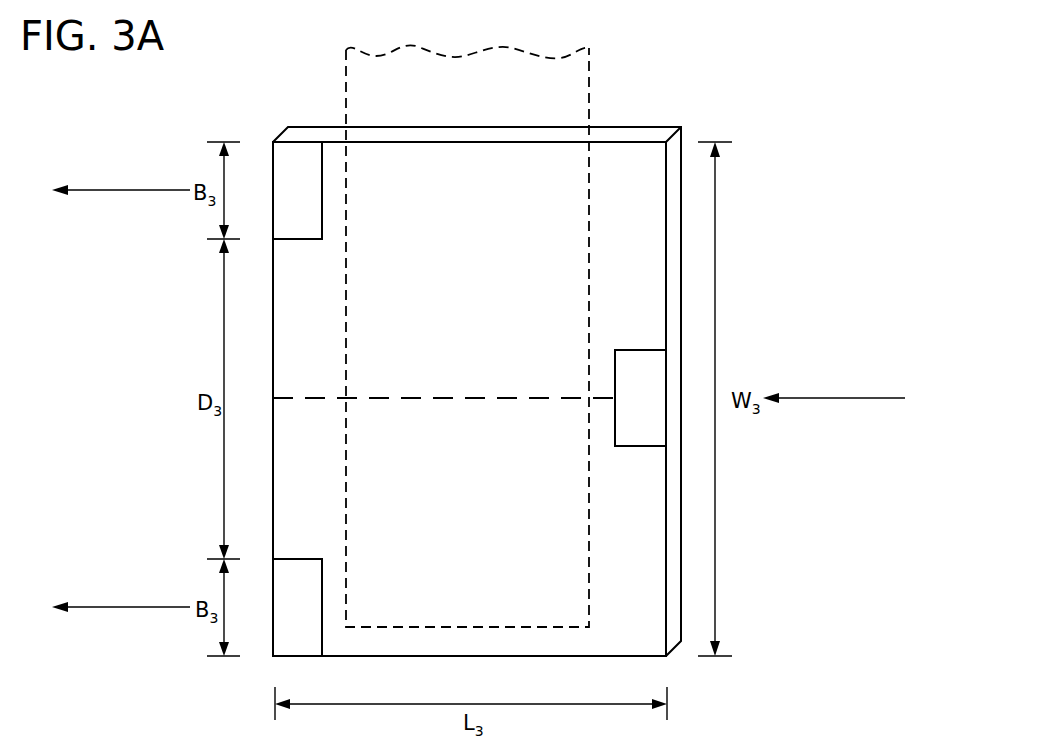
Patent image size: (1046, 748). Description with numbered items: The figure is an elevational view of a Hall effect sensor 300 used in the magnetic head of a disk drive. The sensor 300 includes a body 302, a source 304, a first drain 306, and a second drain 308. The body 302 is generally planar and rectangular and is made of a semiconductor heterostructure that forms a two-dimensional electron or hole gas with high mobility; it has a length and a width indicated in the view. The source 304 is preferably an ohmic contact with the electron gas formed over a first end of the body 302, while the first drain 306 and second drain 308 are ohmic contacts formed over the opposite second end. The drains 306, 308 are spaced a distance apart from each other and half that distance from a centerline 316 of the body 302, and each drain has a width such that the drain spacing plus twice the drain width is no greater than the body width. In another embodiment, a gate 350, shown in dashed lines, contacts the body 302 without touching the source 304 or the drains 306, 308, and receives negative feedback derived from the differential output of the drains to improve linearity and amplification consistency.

The Hall effect sensor 300 is at (258, 120).
The body 302 is at (630, 133).
The source 304 is at (630, 349).
The first drain 306 is at (322, 196).
The second drain 308 is at (322, 600).
The centerline 316 is at (488, 398).
The gate 350 is at (344, 62).